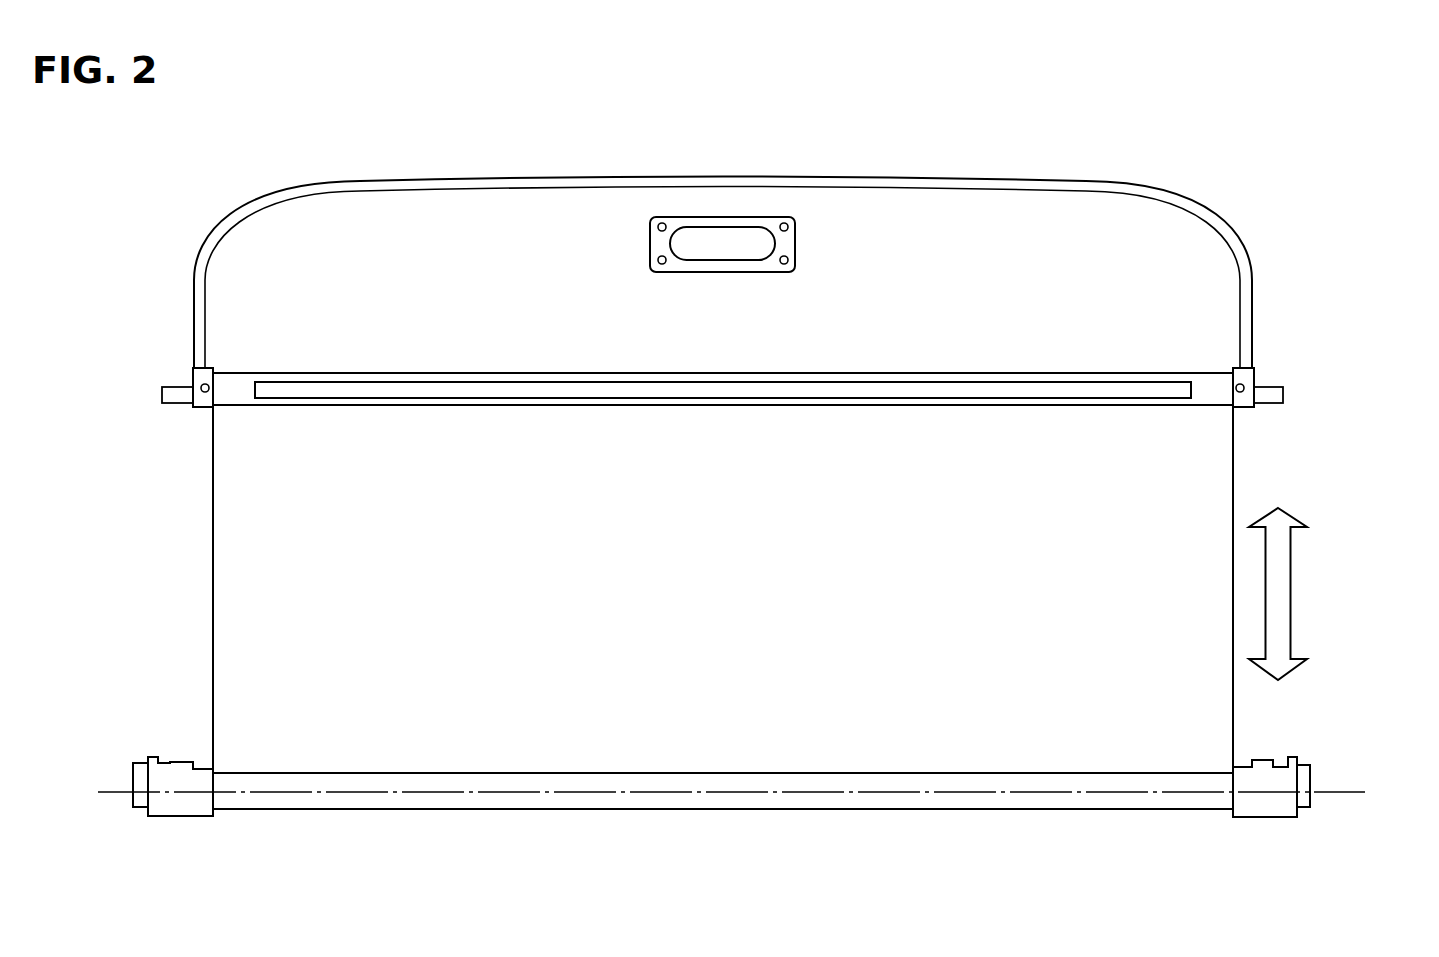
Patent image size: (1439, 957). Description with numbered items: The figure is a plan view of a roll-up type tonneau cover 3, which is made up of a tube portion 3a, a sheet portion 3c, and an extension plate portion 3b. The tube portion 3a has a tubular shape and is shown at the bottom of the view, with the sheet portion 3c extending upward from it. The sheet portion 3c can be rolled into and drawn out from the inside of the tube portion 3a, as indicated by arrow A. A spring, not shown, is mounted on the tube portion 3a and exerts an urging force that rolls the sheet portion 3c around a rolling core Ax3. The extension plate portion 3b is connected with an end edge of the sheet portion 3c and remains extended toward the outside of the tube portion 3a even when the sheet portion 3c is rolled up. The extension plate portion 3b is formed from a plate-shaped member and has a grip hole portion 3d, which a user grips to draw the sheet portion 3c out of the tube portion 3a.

The tonneau cover 3 is at (1280, 207).
The tube portion 3a is at (1279, 792).
The extension plate portion 3b is at (1212, 328).
The sheet portion 3c is at (1207, 506).
The grip hole portion 3d is at (700, 247).
The arrow A is at (1284, 594).
The rolling core Ax3 is at (1341, 800).